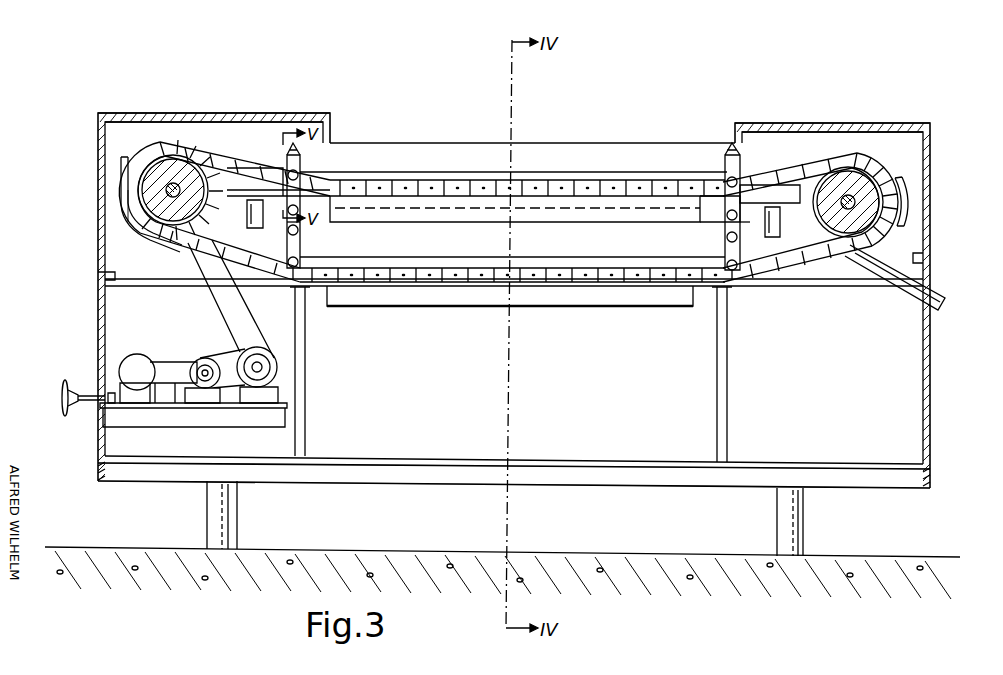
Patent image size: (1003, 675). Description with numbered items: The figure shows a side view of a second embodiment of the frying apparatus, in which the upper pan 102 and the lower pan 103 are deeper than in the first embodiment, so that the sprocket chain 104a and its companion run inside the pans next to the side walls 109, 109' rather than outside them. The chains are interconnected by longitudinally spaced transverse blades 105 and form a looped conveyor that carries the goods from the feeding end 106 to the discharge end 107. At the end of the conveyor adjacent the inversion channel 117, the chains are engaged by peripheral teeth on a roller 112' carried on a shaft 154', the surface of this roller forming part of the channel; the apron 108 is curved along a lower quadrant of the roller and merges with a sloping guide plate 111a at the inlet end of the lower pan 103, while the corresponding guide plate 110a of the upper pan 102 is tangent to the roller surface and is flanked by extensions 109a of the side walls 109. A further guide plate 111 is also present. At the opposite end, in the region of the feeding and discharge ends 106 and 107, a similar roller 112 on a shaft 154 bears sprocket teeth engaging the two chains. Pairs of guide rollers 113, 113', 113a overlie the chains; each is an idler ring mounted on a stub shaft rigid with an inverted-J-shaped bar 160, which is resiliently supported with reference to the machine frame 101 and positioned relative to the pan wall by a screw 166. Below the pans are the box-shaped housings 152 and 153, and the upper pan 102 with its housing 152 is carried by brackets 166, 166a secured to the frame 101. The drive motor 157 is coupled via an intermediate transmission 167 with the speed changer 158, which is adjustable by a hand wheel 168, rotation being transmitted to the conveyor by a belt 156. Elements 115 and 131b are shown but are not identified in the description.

The machine frame 101 is at (440, 494).
The upper pan 102 is at (490, 198).
The lower pan 103 is at (553, 294).
The sprocket chain 104a is at (458, 172).
The transverse blades 105 is at (612, 181).
The feeding end 106 is at (822, 123).
The discharge end 107 is at (940, 292).
The apron 108 is at (127, 224).
The side wall 109 is at (532, 114).
The side wall 109' is at (512, 247).
The side wall extensions 109a is at (190, 150).
The guide plate 110a is at (236, 163).
The guide plate 111 is at (820, 270).
The sloping guide plate 111a is at (212, 293).
The roller 112 is at (934, 199).
The roller 112' is at (110, 198).
The guide roller 113 is at (711, 192).
The guide roller 113' is at (710, 239).
The guide roller 113a is at (310, 176).
The chute plate 115 is at (893, 284).
The inversion channel 117 is at (135, 128).
The post lower bearing 131b is at (303, 232).
The housing 152 is at (553, 221).
The housing 153 is at (470, 306).
The shaft 154 is at (852, 161).
The shaft 154' is at (120, 190).
The belt 156 is at (297, 330).
The drive motor 157 is at (248, 383).
The speed changer 158 is at (132, 370).
The bar 160 is at (300, 150).
The bracket 166 is at (768, 231).
The bracket 166a is at (249, 228).
The intermediate transmission 167 is at (203, 402).
The hand wheel 168 is at (60, 399).